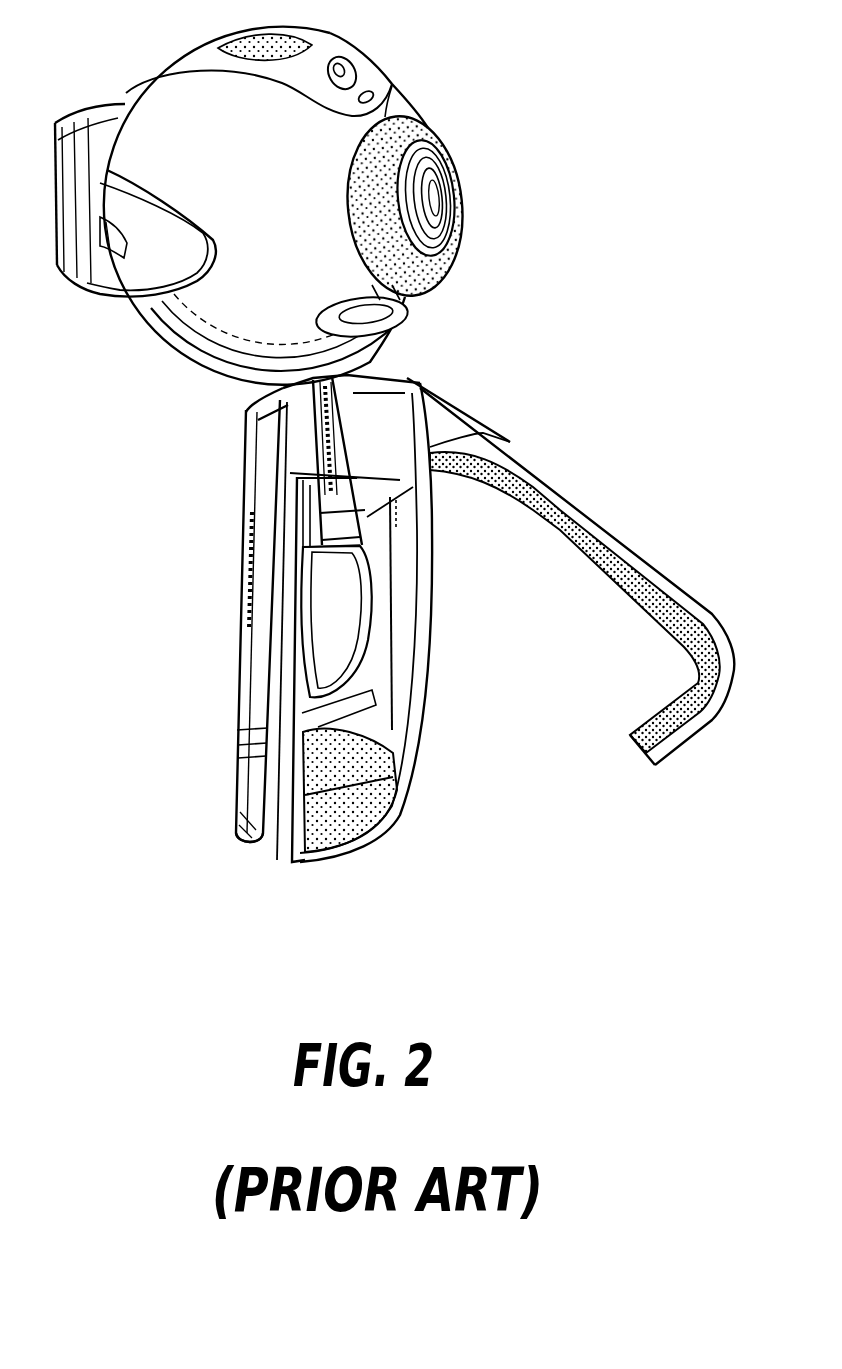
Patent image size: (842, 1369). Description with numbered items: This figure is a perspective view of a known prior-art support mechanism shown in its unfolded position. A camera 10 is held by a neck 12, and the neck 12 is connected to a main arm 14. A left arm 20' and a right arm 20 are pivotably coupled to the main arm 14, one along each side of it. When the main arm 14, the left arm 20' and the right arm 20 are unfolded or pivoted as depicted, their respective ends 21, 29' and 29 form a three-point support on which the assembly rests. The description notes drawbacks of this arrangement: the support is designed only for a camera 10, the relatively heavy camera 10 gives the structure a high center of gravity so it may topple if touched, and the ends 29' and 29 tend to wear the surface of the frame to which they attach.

The camera 10 is at (335, 33).
The neck 12 is at (327, 552).
The main arm 14 is at (405, 640).
The right arm 20 is at (230, 624).
The left arm 20' is at (570, 571).
The end of main arm 21 is at (357, 850).
The end of right arm 29 is at (217, 851).
The end of left arm 29' is at (639, 774).